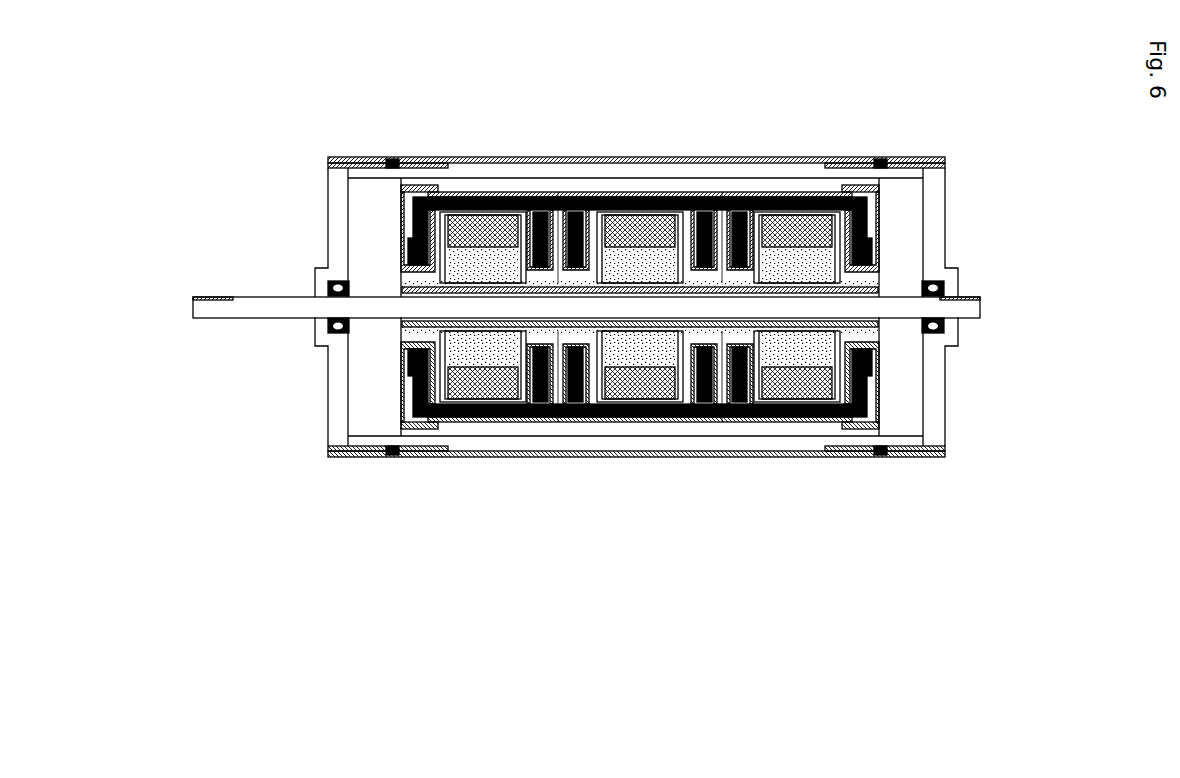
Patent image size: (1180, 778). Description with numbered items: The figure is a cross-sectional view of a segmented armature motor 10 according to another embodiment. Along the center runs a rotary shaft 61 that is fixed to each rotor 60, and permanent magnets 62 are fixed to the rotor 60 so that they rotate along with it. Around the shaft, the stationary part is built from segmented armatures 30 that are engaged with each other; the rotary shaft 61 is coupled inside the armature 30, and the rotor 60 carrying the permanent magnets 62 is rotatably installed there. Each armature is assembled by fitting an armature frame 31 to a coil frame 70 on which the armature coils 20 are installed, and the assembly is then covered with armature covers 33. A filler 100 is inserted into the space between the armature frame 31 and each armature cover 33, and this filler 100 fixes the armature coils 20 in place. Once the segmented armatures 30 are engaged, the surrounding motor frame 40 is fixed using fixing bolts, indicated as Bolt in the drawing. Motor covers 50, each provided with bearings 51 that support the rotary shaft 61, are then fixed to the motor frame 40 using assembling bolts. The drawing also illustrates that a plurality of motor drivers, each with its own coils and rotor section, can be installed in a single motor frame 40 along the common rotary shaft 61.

The segmented armature motor 10 is at (644, 342).
The armature coils 20 is at (787, 178).
The segmented armatures 30 is at (878, 225).
The armature frame 31 is at (491, 425).
The armature covers 33 is at (870, 367).
The motor frame 40 is at (636, 163).
The motor covers 50 is at (937, 187).
The bearings 51 is at (327, 290).
The rotor 60 is at (613, 412).
The rotary shaft 61 is at (968, 296).
The permanent magnets 62 is at (853, 283).
The coil frame 70 is at (857, 380).
The filler 100 is at (870, 400).
The fixing bolt Bolt is at (384, 440).